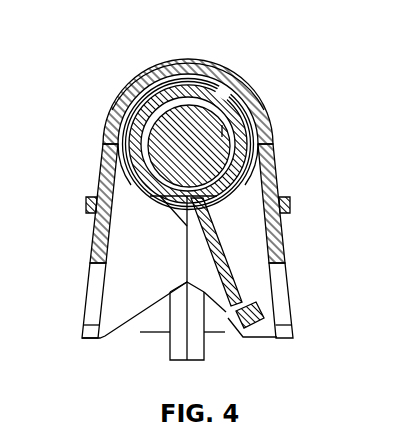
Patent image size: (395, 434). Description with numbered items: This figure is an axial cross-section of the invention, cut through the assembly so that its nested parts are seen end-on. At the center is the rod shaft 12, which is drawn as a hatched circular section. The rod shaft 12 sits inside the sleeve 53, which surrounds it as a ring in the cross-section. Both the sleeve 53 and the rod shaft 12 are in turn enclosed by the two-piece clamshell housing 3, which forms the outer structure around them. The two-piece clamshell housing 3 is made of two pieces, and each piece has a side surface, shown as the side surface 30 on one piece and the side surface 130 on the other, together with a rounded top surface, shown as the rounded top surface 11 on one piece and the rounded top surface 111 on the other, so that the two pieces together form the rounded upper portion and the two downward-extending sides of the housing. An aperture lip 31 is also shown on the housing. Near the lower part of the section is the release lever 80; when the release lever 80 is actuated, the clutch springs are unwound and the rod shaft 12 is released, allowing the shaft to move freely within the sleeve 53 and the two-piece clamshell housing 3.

The two-piece clamshell housing 3 is at (228, 68).
The rounded top surface 11 is at (258, 90).
The rod shaft 12 is at (222, 131).
The side surface 30 is at (274, 172).
The aperture lip 31 is at (90, 199).
The sleeve 53 is at (113, 128).
The release lever 80 is at (241, 330).
The rounded top surface 111 is at (166, 60).
The side surface 130 is at (100, 172).